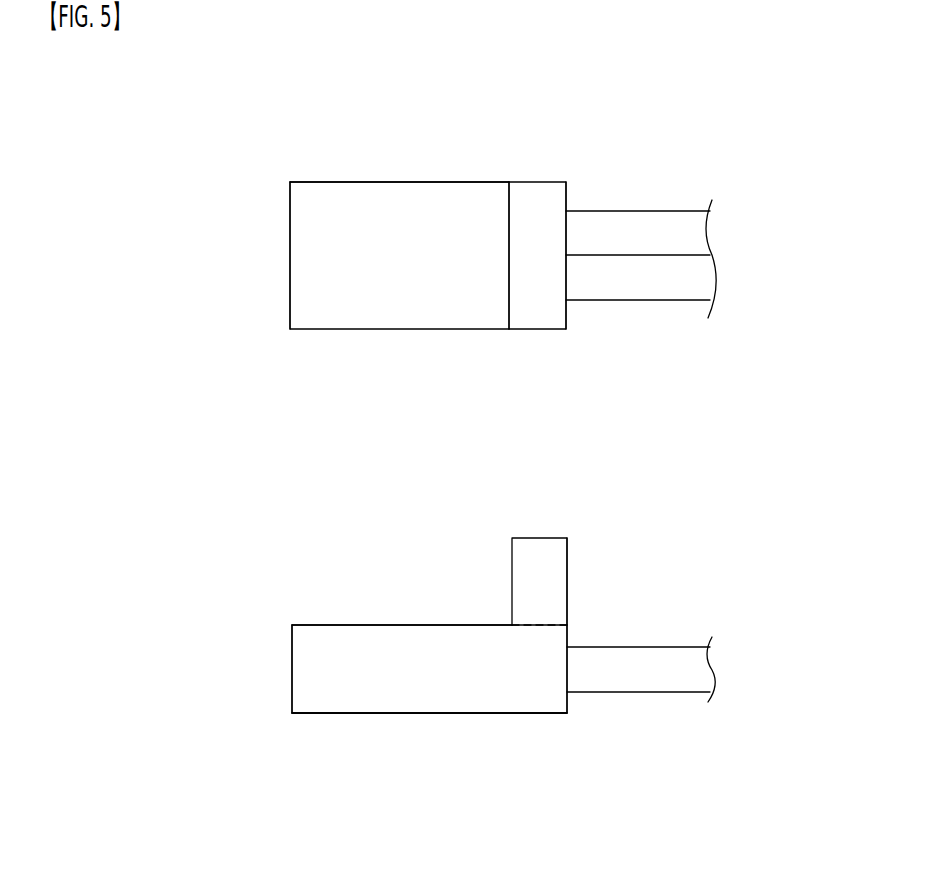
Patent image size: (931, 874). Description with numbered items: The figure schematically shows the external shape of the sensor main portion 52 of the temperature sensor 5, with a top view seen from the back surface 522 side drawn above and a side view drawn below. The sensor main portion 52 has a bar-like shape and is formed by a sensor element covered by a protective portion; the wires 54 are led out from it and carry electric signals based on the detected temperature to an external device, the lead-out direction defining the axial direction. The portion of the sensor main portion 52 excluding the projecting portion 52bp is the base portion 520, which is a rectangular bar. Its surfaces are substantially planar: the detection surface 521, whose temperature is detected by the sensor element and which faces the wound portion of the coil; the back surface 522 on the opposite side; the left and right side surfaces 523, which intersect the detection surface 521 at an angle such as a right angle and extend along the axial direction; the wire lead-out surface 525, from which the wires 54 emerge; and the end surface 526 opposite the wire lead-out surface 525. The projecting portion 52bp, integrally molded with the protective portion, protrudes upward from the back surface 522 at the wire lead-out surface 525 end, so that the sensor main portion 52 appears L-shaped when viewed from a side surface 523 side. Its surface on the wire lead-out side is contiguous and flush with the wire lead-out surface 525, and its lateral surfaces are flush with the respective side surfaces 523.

The temperature sensor 5 is at (713, 163).
The sensor main portion 52 is at (284, 224).
The projecting portion 52bp is at (537, 298).
The wires 54 is at (648, 211).
The base portion 520 is at (508, 160).
The detection surface 521 is at (420, 714).
The back surface 522 is at (380, 285).
The side surfaces 523 is at (492, 181).
The wire lead-out surface 525 is at (567, 312).
The end surface 526 is at (286, 312).